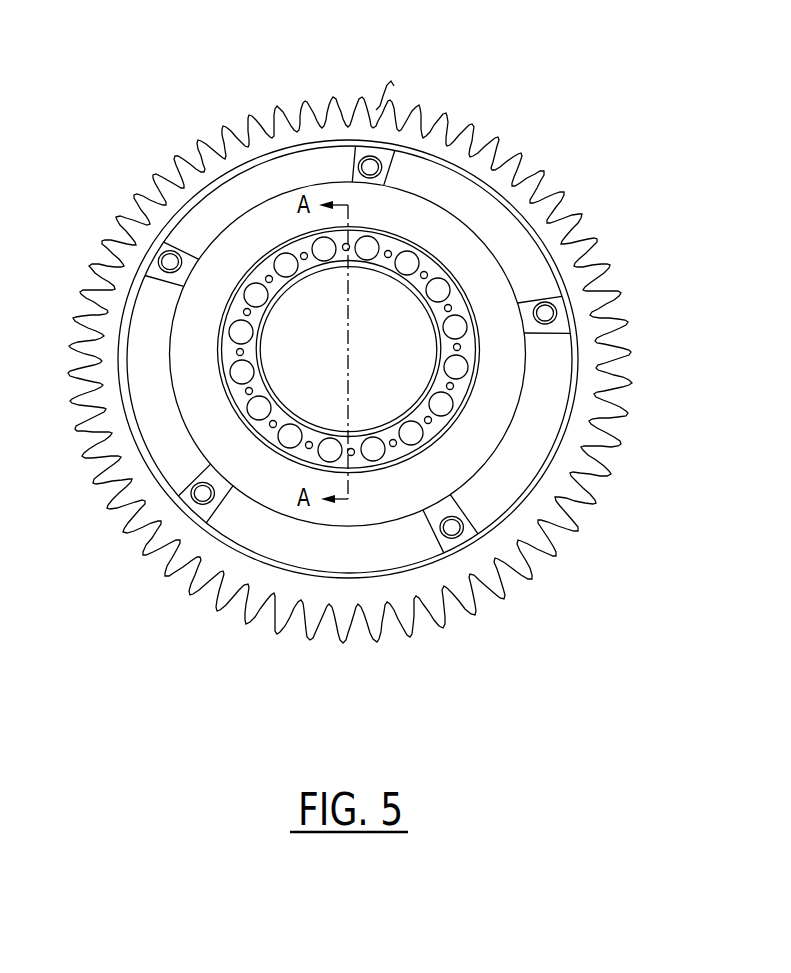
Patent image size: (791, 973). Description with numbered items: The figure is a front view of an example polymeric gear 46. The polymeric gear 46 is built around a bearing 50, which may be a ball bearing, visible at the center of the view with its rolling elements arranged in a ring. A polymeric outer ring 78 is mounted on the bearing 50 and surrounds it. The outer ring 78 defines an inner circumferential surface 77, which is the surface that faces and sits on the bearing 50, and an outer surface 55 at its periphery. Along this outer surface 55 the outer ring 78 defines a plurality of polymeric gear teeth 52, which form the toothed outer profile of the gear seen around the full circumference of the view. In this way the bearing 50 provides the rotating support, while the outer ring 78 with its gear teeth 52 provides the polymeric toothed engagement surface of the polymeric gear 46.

The polymeric gear 46 is at (540, 264).
The bearing 50 is at (242, 318).
The polymeric gear teeth 52 is at (463, 131).
The outer surface 55 is at (388, 102).
The inner circumferential surface 77 is at (293, 233).
The polymeric outer ring 78 is at (505, 378).